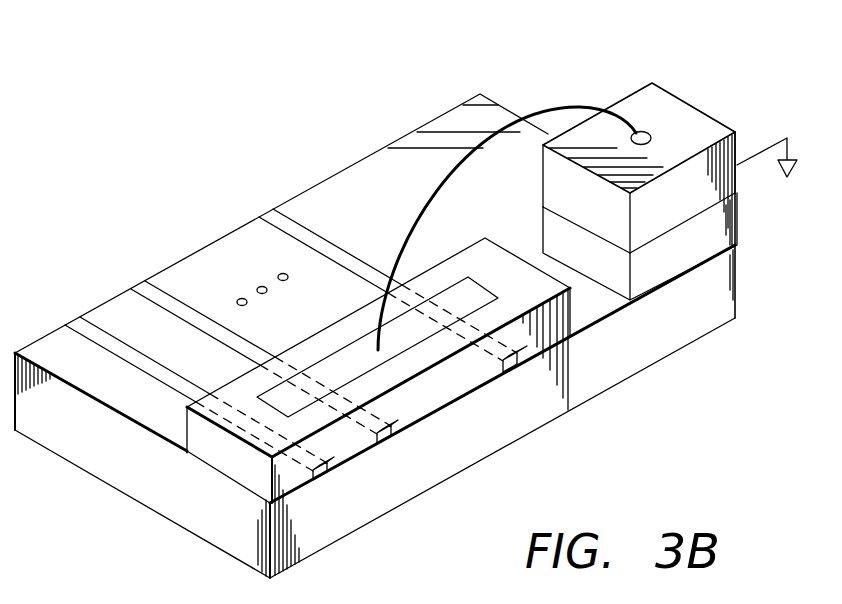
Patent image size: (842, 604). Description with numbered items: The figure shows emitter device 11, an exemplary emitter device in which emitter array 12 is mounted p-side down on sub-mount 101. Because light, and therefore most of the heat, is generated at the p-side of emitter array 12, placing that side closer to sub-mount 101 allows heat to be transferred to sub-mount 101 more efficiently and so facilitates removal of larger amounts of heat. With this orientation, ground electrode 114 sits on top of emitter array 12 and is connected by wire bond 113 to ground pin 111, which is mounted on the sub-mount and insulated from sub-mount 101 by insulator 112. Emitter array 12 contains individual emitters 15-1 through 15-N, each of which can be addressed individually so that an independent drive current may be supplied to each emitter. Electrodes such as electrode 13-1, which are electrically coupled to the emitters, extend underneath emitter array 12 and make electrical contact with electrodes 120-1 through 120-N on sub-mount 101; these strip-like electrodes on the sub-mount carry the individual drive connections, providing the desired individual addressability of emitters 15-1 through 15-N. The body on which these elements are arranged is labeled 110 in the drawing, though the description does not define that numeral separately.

The emitter device 11 is at (372, 66).
The emitter array 12 is at (230, 468).
The electrode 13-1 is at (305, 448).
The emitter 15-1 is at (330, 458).
The emitter 15-N is at (514, 374).
The sub-mount 101 is at (470, 452).
The substrate 110 is at (100, 462).
The ground pin 111 is at (682, 113).
The insulator 112 is at (723, 222).
The wire bond 113 is at (563, 107).
The ground electrode 114 is at (477, 282).
The electrode 120-1 is at (76, 330).
The electrode 120-N is at (266, 222).